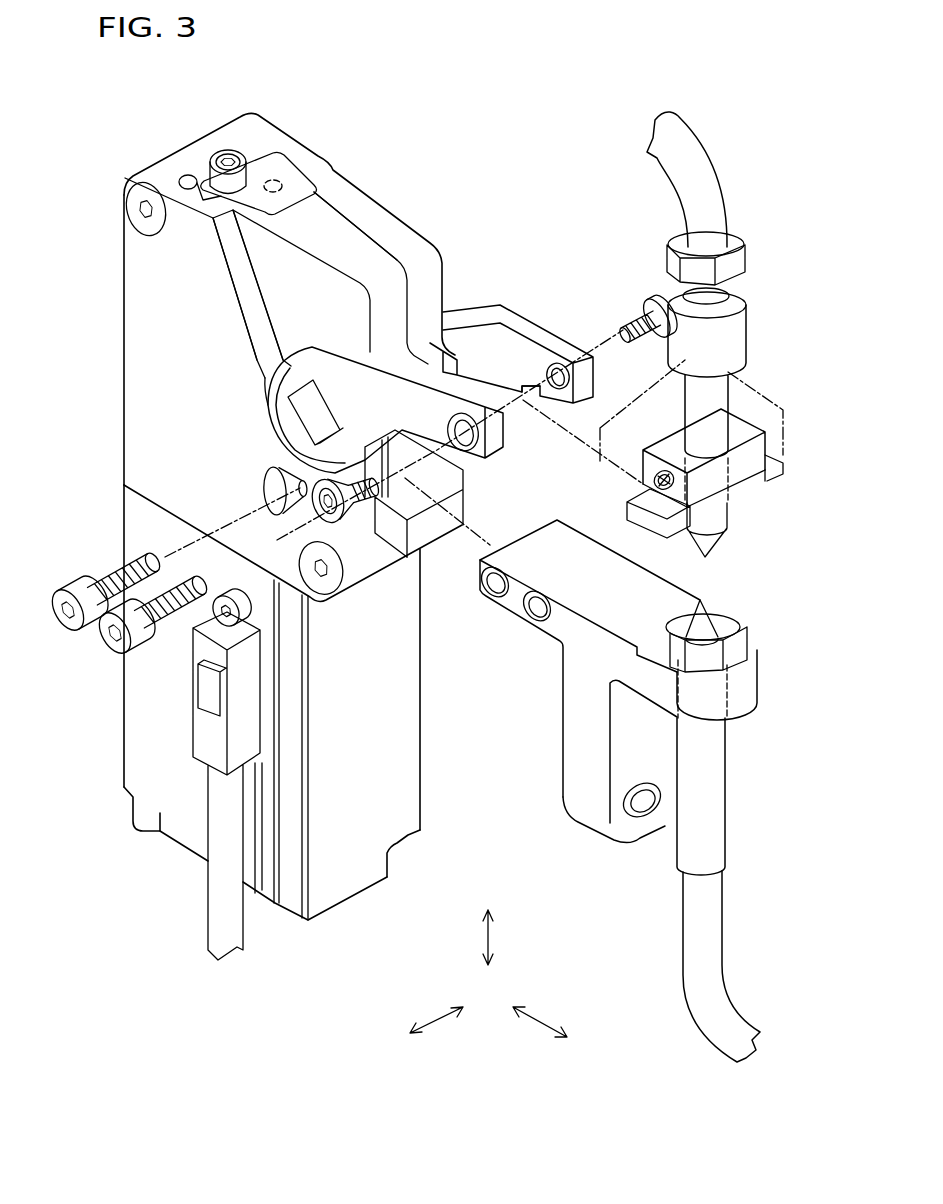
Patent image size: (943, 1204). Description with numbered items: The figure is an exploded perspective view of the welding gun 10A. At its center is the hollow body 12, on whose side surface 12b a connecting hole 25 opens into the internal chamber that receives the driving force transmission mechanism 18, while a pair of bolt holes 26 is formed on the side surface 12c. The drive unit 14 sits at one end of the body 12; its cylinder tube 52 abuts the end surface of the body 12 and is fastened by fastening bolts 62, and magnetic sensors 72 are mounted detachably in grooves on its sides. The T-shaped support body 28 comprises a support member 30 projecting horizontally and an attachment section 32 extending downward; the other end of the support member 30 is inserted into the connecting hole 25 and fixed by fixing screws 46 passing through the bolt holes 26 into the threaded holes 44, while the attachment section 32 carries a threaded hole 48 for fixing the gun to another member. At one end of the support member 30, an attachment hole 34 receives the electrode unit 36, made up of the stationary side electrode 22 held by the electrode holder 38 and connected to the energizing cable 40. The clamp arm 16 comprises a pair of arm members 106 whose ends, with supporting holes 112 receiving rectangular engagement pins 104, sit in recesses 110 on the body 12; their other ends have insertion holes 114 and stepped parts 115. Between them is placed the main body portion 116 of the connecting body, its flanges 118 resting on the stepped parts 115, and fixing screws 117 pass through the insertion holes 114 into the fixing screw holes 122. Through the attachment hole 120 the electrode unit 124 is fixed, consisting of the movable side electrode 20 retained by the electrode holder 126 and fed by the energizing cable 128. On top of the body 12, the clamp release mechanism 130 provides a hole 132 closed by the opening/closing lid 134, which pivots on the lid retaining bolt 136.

The welding gun 10A is at (130, 114).
The body 12 is at (431, 212).
The side surface 12b is at (433, 540).
The side surface 12c is at (155, 310).
The drive unit 14 is at (434, 787).
The clamp arm 16 is at (542, 289).
The driving force transmission mechanism 18 is at (173, 347).
The movable side electrode 20 is at (712, 530).
The stationary side electrode 22 is at (707, 620).
The connecting hole 25 is at (385, 520).
The bolt holes 26 is at (305, 505).
The support body 28 is at (549, 718).
The support member 30 is at (603, 566).
The attachment section 32 is at (560, 784).
The attachment hole 34 is at (731, 697).
The electrode unit 36 is at (754, 612).
The electrode holder 38 is at (721, 797).
The energizing cable 40 is at (716, 920).
The threaded holes for fixing 44 is at (523, 607).
The fixing screws 46 is at (95, 637).
The threaded hole for attachment 48 is at (636, 811).
The cylinder tube 52 is at (421, 692).
The fastening bolts 62 is at (147, 824).
The magnetic sensors 72 is at (200, 733).
The engagement pins 104 is at (307, 418).
The arm members 106 is at (503, 315).
The recesses 110 is at (372, 198).
The supporting holes 112 is at (327, 432).
The insertion holes 114 is at (552, 395).
The stepped parts 115 is at (588, 400).
The main body portion 116 is at (668, 448).
The fixing screws 117 is at (640, 305).
The flanges 118 is at (778, 452).
The attachment hole 120 is at (740, 477).
The fixing screw holes 122 is at (648, 480).
The electrode unit 124 is at (749, 525).
The electrode holder 126 is at (725, 395).
The energizing cable 128 is at (700, 158).
The clamp release mechanism 130 is at (247, 135).
The hole 132 is at (278, 180).
The opening/closing lid 134 is at (278, 207).
The lid retaining bolt 136 is at (218, 152).